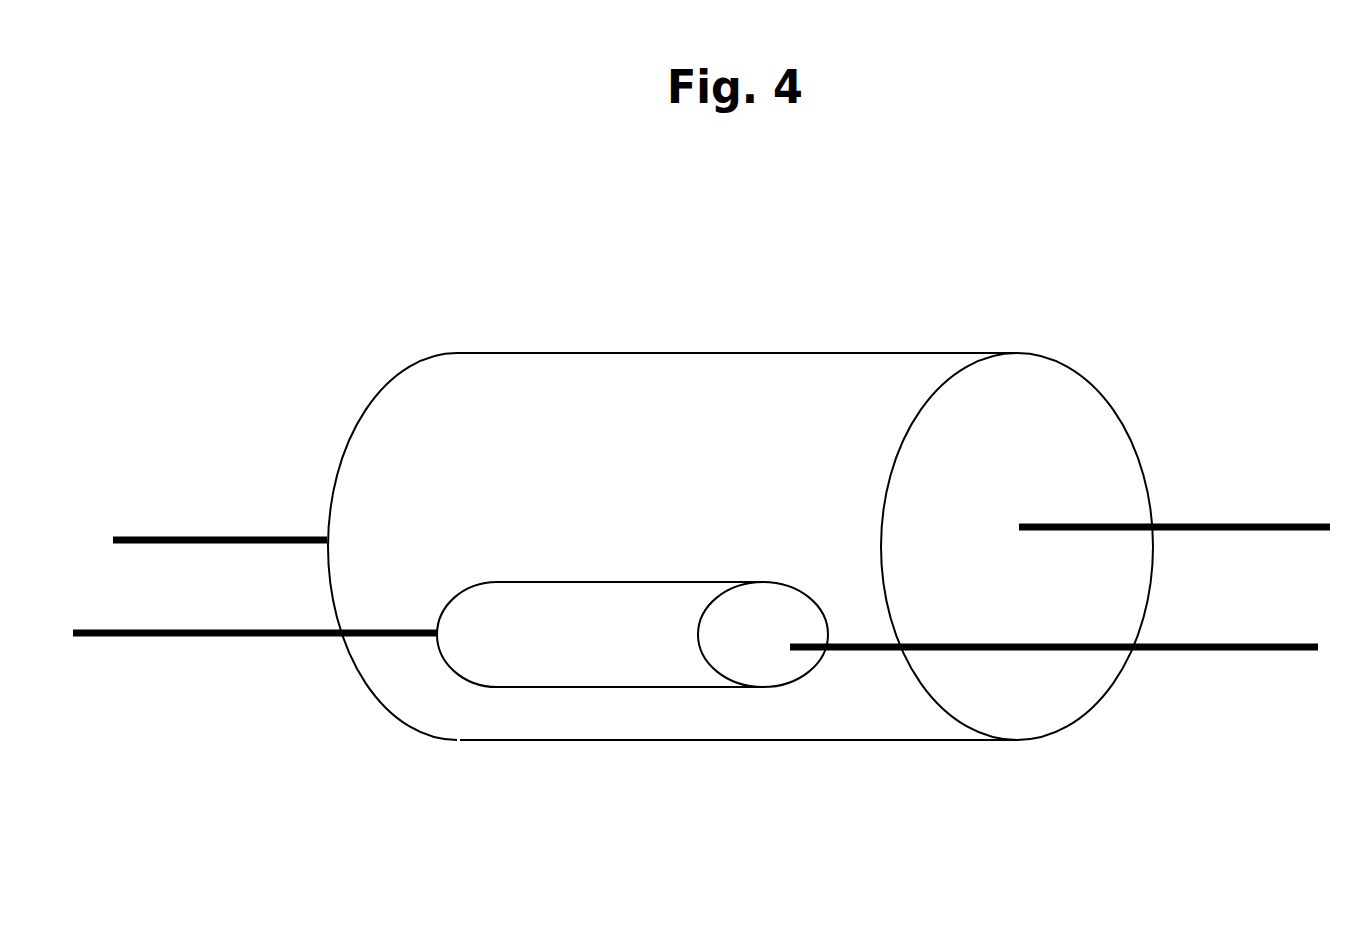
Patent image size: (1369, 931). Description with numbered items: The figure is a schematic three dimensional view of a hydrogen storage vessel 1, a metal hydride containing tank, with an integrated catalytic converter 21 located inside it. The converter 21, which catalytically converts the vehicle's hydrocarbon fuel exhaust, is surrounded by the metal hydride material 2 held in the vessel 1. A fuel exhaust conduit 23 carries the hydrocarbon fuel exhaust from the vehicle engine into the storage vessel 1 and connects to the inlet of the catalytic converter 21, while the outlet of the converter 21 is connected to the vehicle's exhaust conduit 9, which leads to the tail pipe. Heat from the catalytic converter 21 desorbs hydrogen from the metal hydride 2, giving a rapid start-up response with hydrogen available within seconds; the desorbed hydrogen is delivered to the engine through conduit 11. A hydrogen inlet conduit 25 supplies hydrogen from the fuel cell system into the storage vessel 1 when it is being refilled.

The hydrogen storage vessel 1 is at (748, 352).
The metal hydride material 2 is at (531, 433).
The exhaust conduit 9 is at (245, 637).
The conduit 11 is at (1185, 522).
The catalytic converter 21 is at (613, 662).
The fuel exhaust conduit 23 is at (1247, 650).
The hydrogen inlet conduit 25 is at (170, 537).